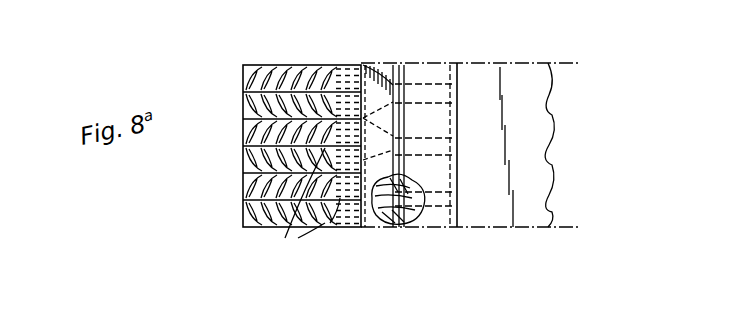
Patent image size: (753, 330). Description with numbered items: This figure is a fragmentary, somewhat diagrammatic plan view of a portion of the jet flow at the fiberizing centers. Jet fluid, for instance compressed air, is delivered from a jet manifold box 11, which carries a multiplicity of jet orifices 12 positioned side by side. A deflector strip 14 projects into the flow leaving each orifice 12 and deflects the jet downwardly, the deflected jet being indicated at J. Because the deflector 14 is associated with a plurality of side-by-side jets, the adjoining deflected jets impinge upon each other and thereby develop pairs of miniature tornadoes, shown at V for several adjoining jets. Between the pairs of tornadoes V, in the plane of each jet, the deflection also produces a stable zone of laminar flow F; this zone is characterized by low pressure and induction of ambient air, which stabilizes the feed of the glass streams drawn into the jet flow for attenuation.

The jet manifold box 11 is at (473, 73).
The jet orifice 12 is at (416, 226).
The deflector strip 14 is at (418, 65).
The tornadoes V is at (247, 105).
The zone of laminar flow F is at (315, 228).
The deflected jet J is at (377, 227).